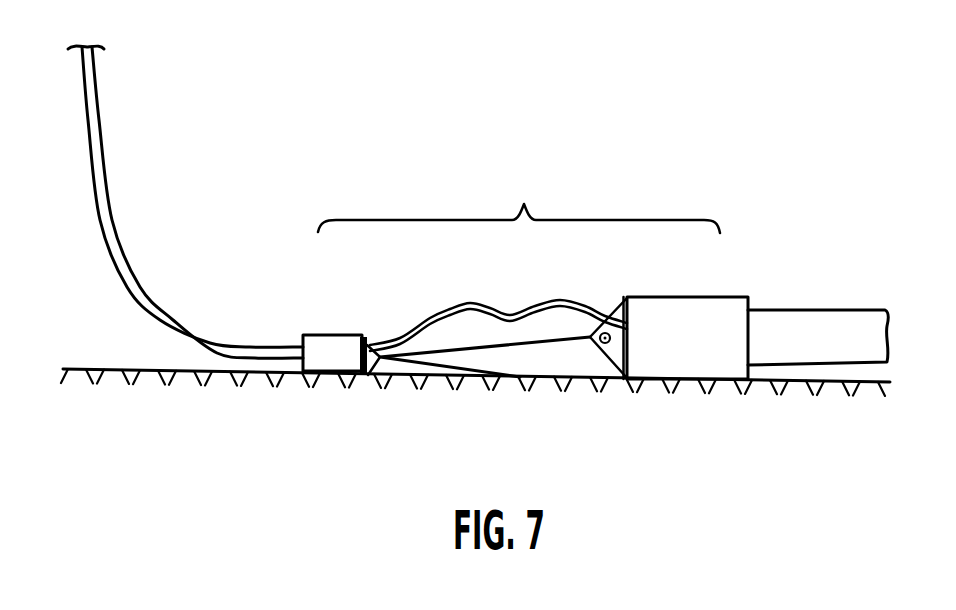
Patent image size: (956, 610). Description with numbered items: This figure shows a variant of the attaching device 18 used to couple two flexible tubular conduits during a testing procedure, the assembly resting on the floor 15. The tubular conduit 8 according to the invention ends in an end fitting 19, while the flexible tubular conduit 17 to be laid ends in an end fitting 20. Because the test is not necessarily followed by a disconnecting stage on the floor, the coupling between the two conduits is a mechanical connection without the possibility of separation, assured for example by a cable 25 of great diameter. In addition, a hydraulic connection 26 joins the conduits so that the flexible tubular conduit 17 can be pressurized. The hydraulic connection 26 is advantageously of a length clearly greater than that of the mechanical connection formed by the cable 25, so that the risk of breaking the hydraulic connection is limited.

The tubular conduit 8 is at (120, 228).
The floor 15 is at (140, 370).
The flexible tubular conduit 17 is at (830, 330).
The attaching device 18 is at (519, 196).
The end fitting 19 is at (338, 348).
The end fitting 20 is at (697, 322).
The cable 25 is at (488, 352).
The hydraulic connection 26 is at (480, 305).